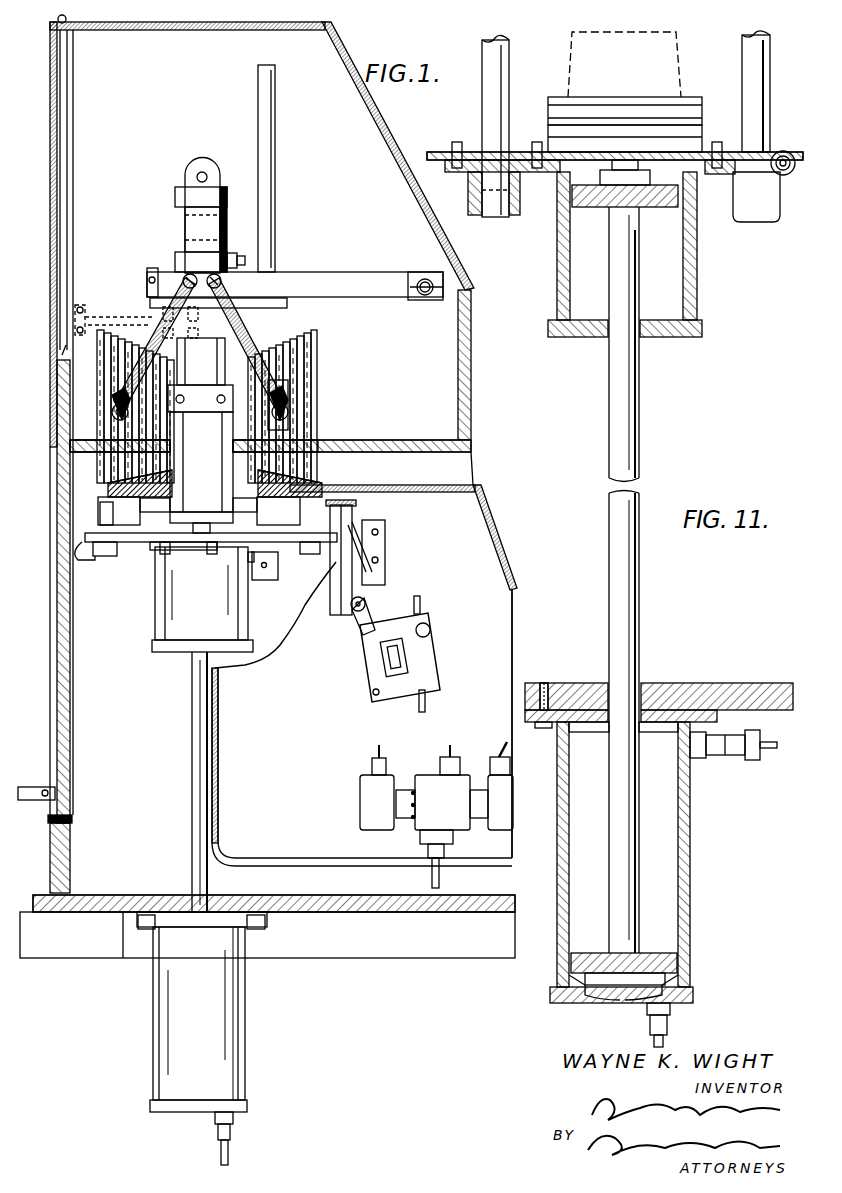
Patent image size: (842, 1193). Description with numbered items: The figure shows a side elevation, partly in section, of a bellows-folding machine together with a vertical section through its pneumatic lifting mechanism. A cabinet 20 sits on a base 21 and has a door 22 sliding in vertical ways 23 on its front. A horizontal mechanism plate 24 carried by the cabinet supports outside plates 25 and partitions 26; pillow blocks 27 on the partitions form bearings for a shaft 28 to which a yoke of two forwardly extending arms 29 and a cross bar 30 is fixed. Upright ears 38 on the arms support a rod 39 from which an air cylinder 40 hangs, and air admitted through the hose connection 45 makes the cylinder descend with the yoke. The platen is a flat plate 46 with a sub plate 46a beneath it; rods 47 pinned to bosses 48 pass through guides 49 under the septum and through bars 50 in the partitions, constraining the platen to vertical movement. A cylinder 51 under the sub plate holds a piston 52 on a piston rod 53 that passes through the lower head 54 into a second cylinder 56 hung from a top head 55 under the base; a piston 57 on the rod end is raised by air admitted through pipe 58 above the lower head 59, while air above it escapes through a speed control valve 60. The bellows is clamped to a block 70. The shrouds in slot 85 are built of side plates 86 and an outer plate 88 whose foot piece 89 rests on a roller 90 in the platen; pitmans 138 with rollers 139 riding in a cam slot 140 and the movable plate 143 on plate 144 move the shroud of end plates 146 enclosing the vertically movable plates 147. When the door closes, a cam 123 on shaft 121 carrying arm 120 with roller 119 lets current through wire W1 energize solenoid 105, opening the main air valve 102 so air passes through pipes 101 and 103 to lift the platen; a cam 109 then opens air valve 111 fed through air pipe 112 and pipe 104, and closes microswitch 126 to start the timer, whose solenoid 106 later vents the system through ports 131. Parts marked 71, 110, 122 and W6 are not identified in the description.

In FIG. 1, the cabinet 20 is at (405, 200).
In FIG. 1, the base 21 is at (125, 895).
In FIG. 11, the base 21 is at (740, 683).
In FIG. 1, the door 22 is at (55, 686).
In FIG. 1, the vertical ways 23 is at (70, 640).
In FIG. 1, the horizontal mechanism plate 24 is at (400, 440).
In FIG. 1, the outside plates 25 is at (474, 370).
In FIG. 1, the partitions 26 is at (416, 358).
In FIG. 1, the pillow blocks 27 is at (412, 272).
In FIG. 1, the shaft 28 is at (423, 296).
In FIG. 1, the yoke arms 29 is at (315, 272).
In FIG. 1, the cross bar 30 is at (147, 270).
In FIG. 1, the upright ears 38 is at (184, 172).
In FIG. 1, the rod 39 is at (202, 172).
In FIG. 1, the air cylinder 40 is at (185, 224).
In FIG. 1, the hose connection 45 is at (236, 253).
In FIG. 1, the platen 46 is at (130, 542).
In FIG. 11, the platen 46 is at (448, 152).
In FIG. 1, the sub plate 46a is at (158, 552).
In FIG. 1, the guide rods 47 is at (276, 200).
In FIG. 11, the guide rods 47 is at (509, 60).
In FIG. 1, the bosses 48 is at (262, 582).
In FIG. 11, the bosses 48 is at (508, 215).
In FIG. 1, the guides 49 is at (300, 470).
In FIG. 1, the bars 50 is at (289, 302).
In FIG. 1, the cylinder 51 is at (156, 612).
In FIG. 11, the cylinder 51 is at (557, 287).
In FIG. 11, the piston 52 is at (665, 210).
In FIG. 1, the piston rod 53 is at (192, 727).
In FIG. 11, the piston rod 53 is at (611, 425).
In FIG. 11, the lower head 54 is at (600, 337).
In FIG. 11, the top head 55 is at (665, 725).
In FIG. 1, the second cylinder 56 is at (240, 1038).
In FIG. 11, the second cylinder 56 is at (690, 882).
In FIG. 11, the piston 57 is at (650, 953).
In FIG. 1, the pipe 58 is at (230, 1135).
In FIG. 11, the pipe 58 is at (670, 1022).
In FIG. 1, the lower head 59 is at (150, 1110).
In FIG. 11, the lower head 59 is at (694, 992).
In FIG. 11, the speed control valve 60 is at (728, 758).
In FIG. 11, the block 70 is at (548, 107).
In FIG. 11, the motor base 71 is at (548, 137).
In FIG. 1, the slot 85 is at (240, 440).
In FIG. 1, the side plates 86 is at (222, 363).
In FIG. 1, the outer plate 88 is at (201, 472).
In FIG. 1, the foot piece 89 is at (82, 548).
In FIG. 11, the roller 90 is at (785, 150).
In FIG. 1, the pipe 101 is at (458, 745).
In FIG. 1, the main air valve 102 is at (442, 802).
In FIG. 1, the pipe 103 is at (430, 880).
In FIG. 1, the pipe 104 is at (426, 705).
In FIG. 1, the solenoid 105 is at (362, 797).
In FIG. 1, the solenoid 106 is at (495, 830).
In FIG. 1, the cam 109 is at (345, 515).
In FIG. 1, the switch arm 110 is at (366, 602).
In FIG. 1, the air valve 111 is at (436, 665).
In FIG. 1, the air pipe 112 is at (422, 605).
In FIG. 1, the roller 119 is at (65, 358).
In FIG. 1, the arm 120 is at (76, 330).
In FIG. 1, the shaft 121 is at (96, 315).
In FIG. 1, the pin 122 is at (76, 308).
In FIG. 1, the cam 123 is at (155, 316).
In FIG. 1, the microswitch 126 is at (386, 548).
In FIG. 1, the ports 131 is at (413, 785).
In FIG. 1, the pitmans 138 is at (180, 283).
In FIG. 1, the roller 139 is at (290, 413).
In FIG. 1, the cam slot 140 is at (290, 400).
In FIG. 1, the movable plate 143 is at (292, 388).
In FIG. 1, the plate 144 is at (305, 432).
In FIG. 1, the end plates 146 is at (98, 486).
In FIG. 1, the vertically movable plates 147 is at (290, 360).
In FIG. 1, the wire W1 is at (376, 746).
In FIG. 1, the wire W6 is at (493, 750).